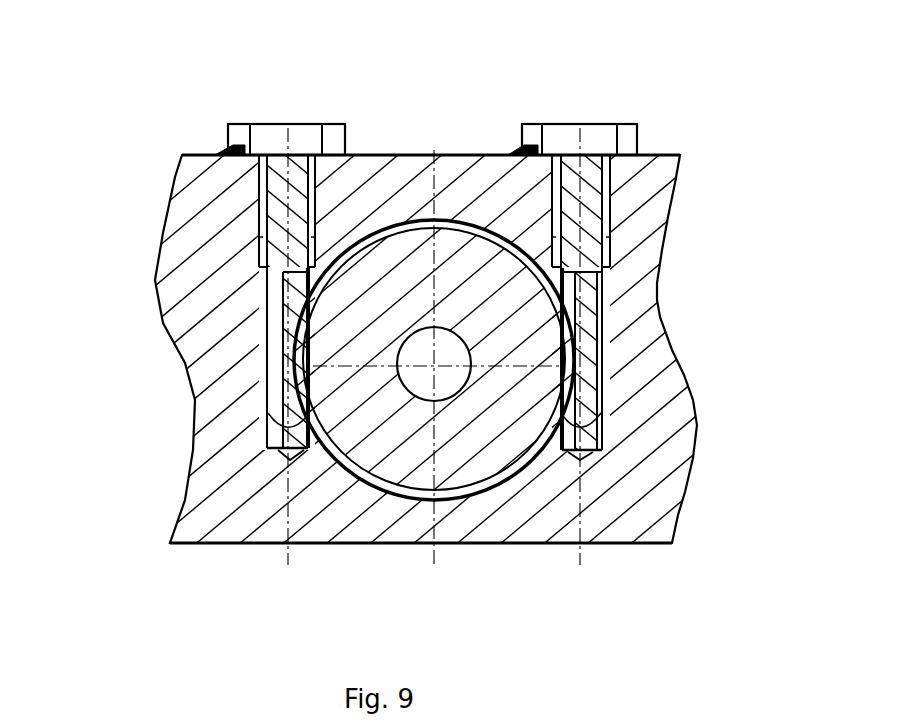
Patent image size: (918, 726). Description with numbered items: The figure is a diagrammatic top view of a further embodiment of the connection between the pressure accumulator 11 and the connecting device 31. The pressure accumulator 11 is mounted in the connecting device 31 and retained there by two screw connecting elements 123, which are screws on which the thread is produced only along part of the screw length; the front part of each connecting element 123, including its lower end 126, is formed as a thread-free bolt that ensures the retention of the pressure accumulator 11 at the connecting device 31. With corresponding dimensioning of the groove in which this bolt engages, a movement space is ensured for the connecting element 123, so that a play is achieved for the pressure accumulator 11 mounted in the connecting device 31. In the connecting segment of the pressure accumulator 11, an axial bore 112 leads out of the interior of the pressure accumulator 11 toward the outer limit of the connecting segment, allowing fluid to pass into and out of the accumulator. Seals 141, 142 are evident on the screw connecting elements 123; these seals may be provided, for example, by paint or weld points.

The pressure accumulator 11 is at (480, 450).
The axial bore 112 is at (442, 375).
The connecting device 31 is at (380, 185).
The screw connecting element 123 is at (278, 293).
The bolt tip 126 is at (290, 442).
The seal 141 is at (520, 148).
The seal 142 is at (230, 150).